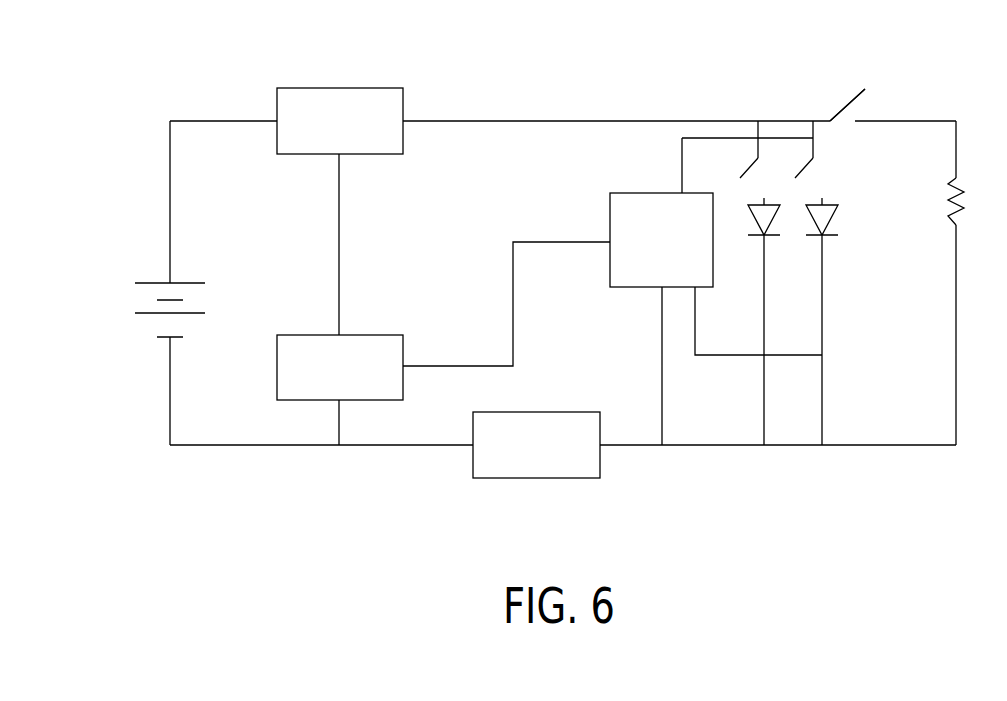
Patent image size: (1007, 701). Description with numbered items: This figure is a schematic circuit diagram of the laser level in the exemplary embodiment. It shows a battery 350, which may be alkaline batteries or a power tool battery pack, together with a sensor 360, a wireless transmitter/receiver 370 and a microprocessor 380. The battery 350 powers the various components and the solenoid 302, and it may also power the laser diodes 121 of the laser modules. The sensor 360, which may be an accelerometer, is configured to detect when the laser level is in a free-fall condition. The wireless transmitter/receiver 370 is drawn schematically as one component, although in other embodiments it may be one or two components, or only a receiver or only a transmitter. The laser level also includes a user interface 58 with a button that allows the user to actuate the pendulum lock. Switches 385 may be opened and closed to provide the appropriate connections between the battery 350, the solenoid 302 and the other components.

The sensor 360 is at (357, 88).
The wireless transmitter/receiver 370 is at (390, 335).
The microprocessor 380 is at (610, 236).
The user interface 58 is at (556, 412).
The battery 350 is at (137, 300).
The solenoid 302 is at (957, 180).
The switches 385 is at (848, 102).
The laser diodes 121 is at (750, 212).